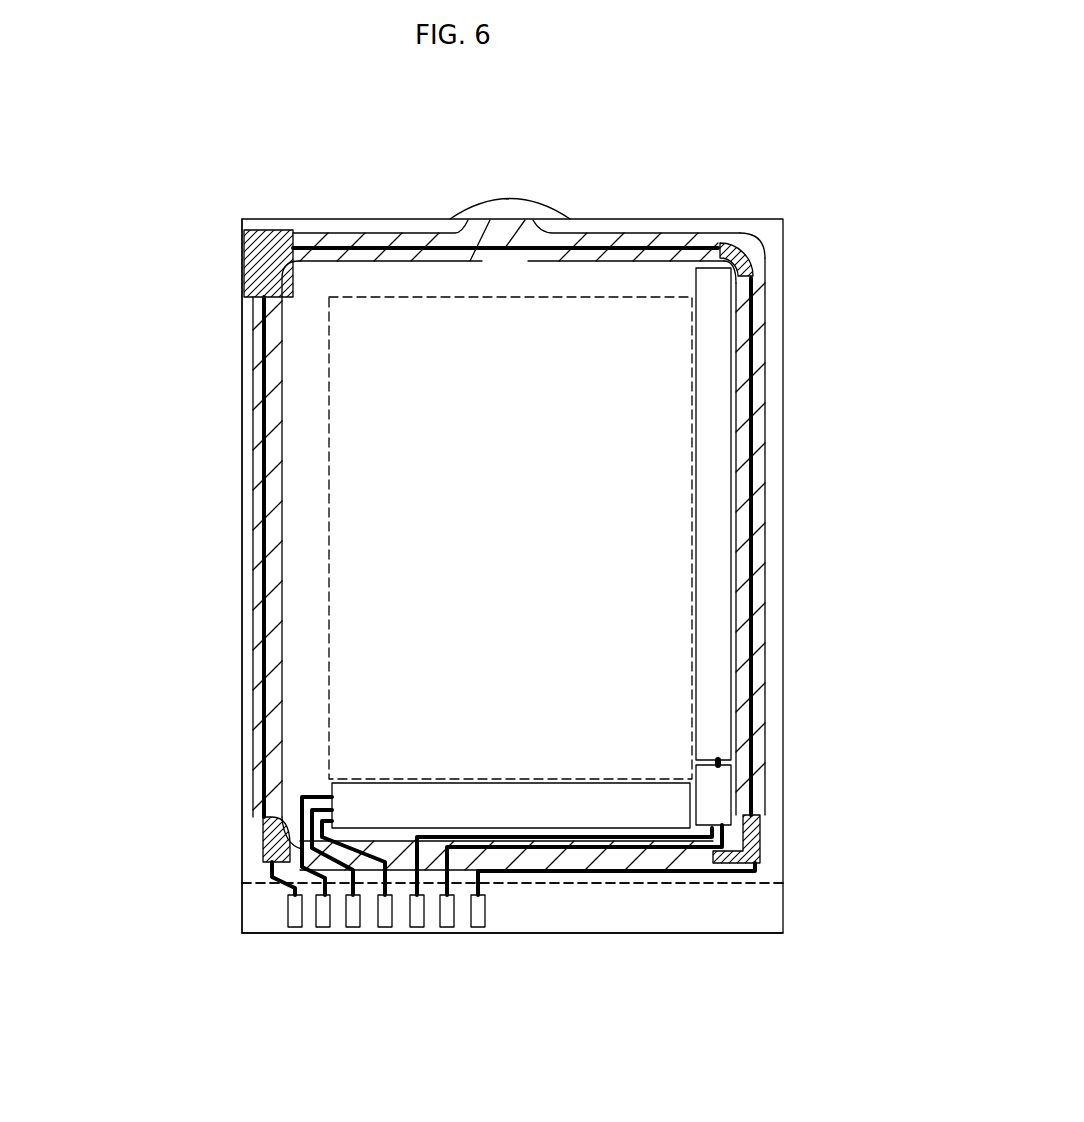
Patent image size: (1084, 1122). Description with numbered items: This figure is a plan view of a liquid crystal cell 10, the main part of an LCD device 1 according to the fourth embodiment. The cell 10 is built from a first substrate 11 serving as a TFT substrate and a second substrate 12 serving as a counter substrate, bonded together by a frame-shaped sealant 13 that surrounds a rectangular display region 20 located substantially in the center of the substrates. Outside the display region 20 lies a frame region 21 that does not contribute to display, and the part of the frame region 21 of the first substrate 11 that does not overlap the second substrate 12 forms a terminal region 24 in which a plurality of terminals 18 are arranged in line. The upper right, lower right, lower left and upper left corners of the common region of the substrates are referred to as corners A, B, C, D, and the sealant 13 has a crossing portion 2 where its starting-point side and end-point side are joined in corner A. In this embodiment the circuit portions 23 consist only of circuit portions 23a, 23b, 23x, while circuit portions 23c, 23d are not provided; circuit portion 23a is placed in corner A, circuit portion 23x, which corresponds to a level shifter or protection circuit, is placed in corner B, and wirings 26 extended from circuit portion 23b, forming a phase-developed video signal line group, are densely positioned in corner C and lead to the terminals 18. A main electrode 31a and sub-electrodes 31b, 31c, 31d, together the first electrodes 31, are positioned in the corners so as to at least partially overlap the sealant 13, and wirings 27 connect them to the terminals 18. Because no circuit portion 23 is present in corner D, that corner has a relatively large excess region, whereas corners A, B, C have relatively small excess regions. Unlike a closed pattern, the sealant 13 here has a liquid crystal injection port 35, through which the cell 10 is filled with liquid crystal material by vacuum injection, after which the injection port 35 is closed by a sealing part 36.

The display device 1 is at (487, 566).
The liquid crystal cell 10 is at (512, 576).
The crossing portion 2 is at (758, 258).
The first substrate 11 is at (672, 938).
The second substrate 12 is at (768, 888).
The sealant 13 is at (258, 527).
The terminals 18 is at (388, 928).
The display region 20 is at (350, 380).
The frame region 21 is at (243, 437).
The circuit portions 23 is at (498, 586).
The circuit portion 23a is at (715, 465).
The circuit portion 23b is at (515, 826).
The circuit portion 23c is at (297, 640).
The circuit portion 23d is at (432, 276).
The circuit portion 23x is at (720, 802).
The terminal region 24 is at (572, 906).
The wirings 26 is at (345, 893).
The wirings 27 is at (325, 240).
The first electrodes 31 is at (487, 504).
The main electrode 31a is at (246, 278).
The sub-electrode 31b is at (758, 830).
The sub-electrode 31c is at (262, 850).
The sub-electrode 31d is at (728, 243).
The liquid crystal injection port 35 is at (500, 229).
The sealing part 36 is at (530, 205).
The corner A is at (785, 218).
The corner B is at (776, 870).
The corner C is at (246, 880).
The corner D is at (243, 226).